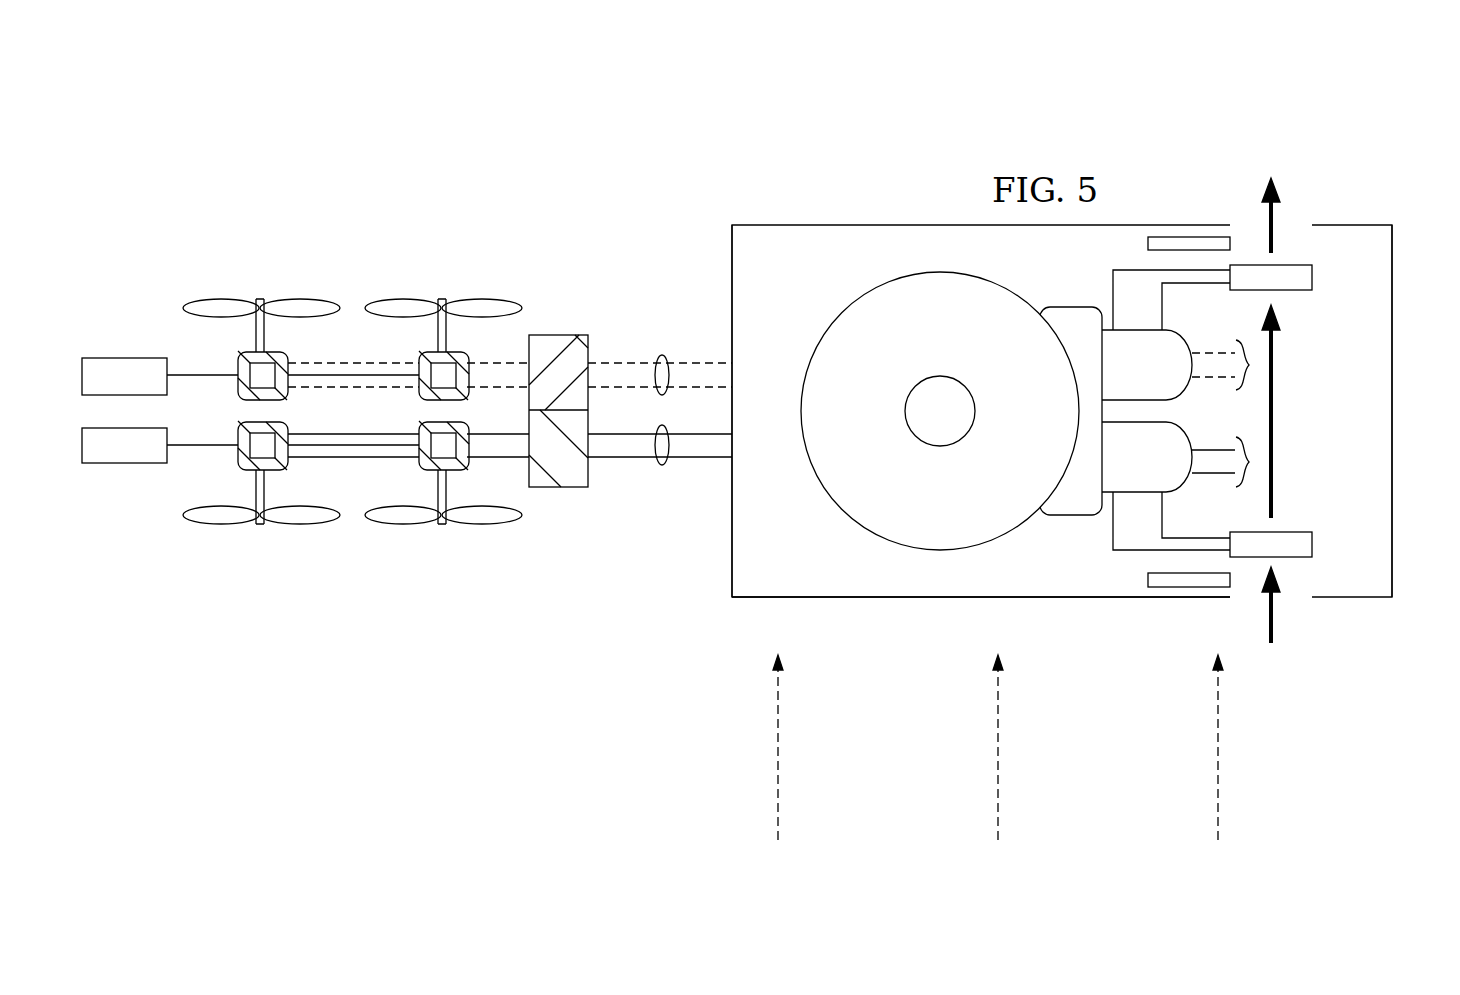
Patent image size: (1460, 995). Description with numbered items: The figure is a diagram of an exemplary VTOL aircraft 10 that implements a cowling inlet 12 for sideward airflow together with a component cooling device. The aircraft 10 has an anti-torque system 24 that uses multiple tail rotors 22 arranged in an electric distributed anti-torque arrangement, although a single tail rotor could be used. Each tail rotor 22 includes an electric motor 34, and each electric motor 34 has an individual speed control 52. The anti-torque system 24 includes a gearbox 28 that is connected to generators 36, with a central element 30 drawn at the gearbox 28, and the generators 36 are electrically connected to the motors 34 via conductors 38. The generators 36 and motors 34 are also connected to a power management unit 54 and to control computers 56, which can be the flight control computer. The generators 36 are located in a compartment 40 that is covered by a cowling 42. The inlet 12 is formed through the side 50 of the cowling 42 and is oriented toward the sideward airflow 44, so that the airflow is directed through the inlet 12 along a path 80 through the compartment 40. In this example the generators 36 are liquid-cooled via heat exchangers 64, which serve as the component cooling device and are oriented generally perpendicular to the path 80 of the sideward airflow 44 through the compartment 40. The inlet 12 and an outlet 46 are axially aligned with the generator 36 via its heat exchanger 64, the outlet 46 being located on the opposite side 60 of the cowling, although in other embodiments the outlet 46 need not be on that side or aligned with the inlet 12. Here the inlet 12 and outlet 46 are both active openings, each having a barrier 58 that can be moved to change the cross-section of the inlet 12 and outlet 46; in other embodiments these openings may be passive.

The aircraft 10 is at (402, 112).
The cowling inlet 12 is at (1296, 615).
The tail rotor 22 is at (256, 279).
The anti-torque system 24 is at (524, 220).
The gearbox 28 is at (1013, 427).
The engine shaft 30 is at (940, 447).
The electric motor 34 is at (250, 353).
The generator 36 is at (1173, 328).
The conductor 38 is at (660, 355).
The compartment 40 is at (744, 427).
The cowling 42 is at (1394, 290).
The sideward airflow 44 is at (778, 752).
The outlet 46 is at (1297, 203).
The side 50 is at (850, 598).
The speed control 52 is at (262, 369).
The power management unit 54 is at (558, 335).
The control computer 56 is at (118, 357).
The barrier 58 is at (1148, 243).
The side 60 is at (850, 224).
The heat exchanger 64 is at (1313, 280).
The path 80 is at (1294, 396).